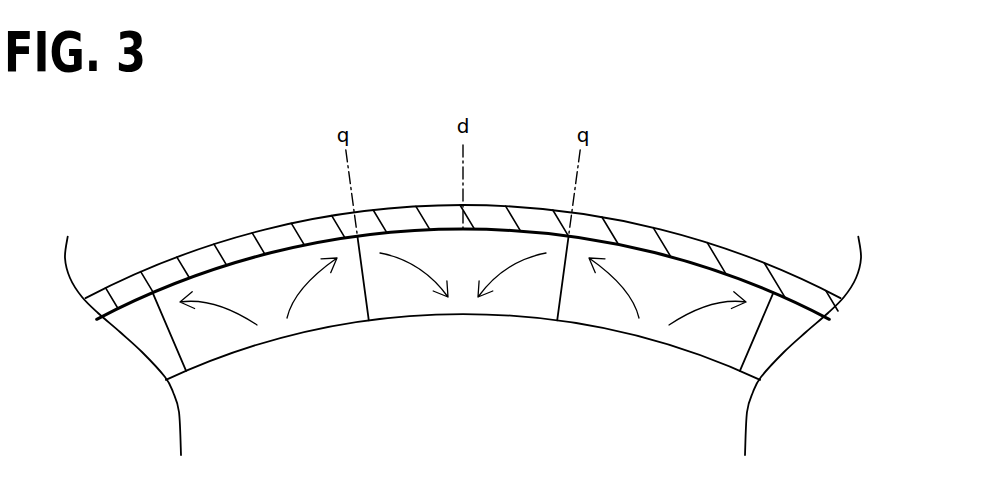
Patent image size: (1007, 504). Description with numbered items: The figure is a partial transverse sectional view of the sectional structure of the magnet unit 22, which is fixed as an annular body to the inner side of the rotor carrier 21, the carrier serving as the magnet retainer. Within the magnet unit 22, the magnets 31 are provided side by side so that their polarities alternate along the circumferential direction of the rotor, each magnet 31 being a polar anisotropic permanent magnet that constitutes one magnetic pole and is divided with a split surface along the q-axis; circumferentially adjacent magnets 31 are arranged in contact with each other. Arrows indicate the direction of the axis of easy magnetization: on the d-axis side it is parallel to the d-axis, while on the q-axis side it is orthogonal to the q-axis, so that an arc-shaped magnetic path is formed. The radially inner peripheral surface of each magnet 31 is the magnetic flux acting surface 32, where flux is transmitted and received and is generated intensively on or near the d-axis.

The rotor carrier 21 is at (300, 218).
The magnet unit 22 is at (676, 138).
The magnet 31 is at (348, 323).
The magnetic flux acting surface 32 is at (230, 354).